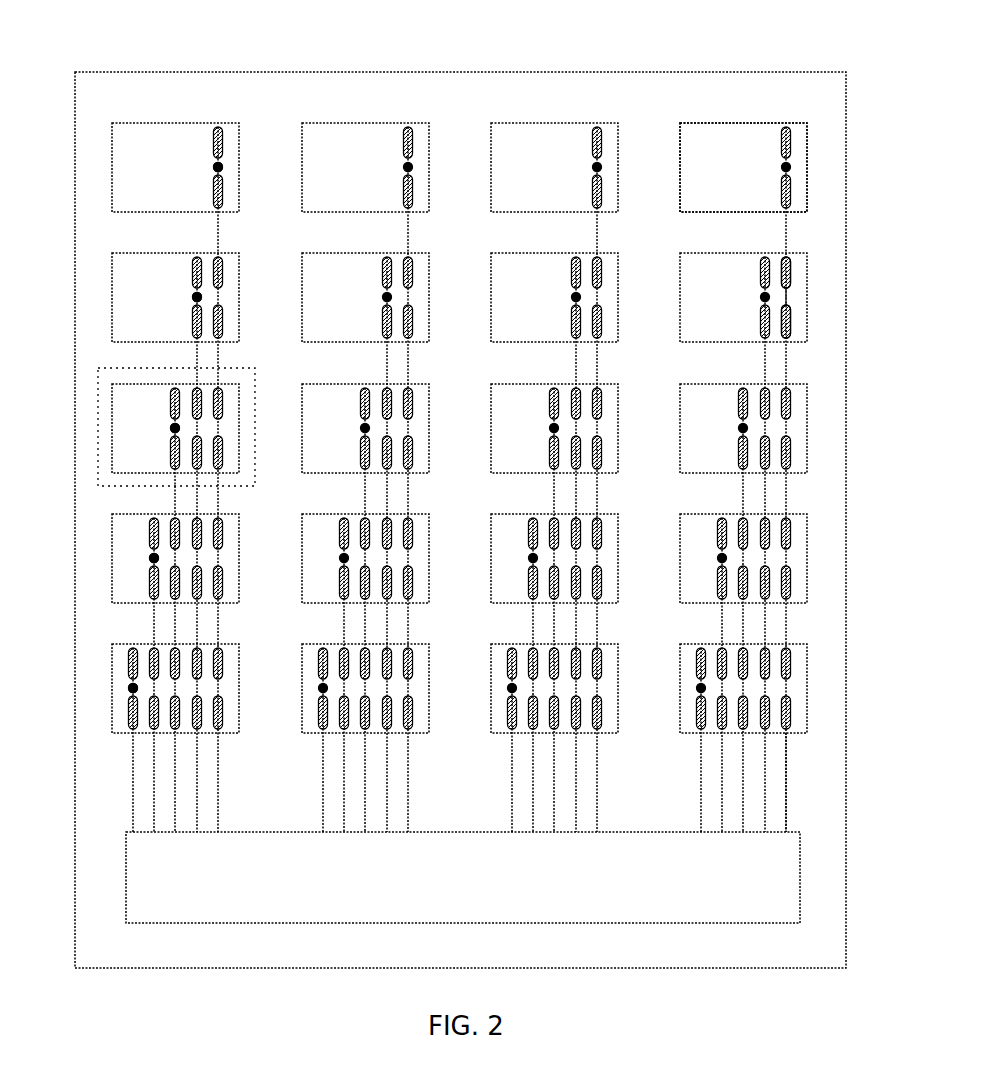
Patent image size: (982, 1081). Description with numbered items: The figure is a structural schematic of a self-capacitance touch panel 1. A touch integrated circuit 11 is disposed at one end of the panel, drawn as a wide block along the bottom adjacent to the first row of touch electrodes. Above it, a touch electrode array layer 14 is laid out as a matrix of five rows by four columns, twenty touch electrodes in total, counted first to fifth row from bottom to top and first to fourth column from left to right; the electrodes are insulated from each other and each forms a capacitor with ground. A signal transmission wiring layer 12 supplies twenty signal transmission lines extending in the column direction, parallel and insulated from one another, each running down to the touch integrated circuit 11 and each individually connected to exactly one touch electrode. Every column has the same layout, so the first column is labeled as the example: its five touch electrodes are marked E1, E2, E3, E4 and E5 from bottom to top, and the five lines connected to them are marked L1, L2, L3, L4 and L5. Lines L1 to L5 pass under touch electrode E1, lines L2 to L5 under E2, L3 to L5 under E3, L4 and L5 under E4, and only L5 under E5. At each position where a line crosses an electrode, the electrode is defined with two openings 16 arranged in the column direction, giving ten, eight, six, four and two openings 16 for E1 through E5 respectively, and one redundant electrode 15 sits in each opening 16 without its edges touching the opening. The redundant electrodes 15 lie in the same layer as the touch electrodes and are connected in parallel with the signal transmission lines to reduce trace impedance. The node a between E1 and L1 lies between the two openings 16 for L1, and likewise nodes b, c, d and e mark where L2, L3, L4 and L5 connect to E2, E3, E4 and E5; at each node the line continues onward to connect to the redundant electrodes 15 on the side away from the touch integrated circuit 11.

The self-capacitance touch panel 1 is at (503, 97).
The touch integrated circuit 11 is at (767, 900).
The signal transmission wiring layer 12 is at (787, 771).
The touch electrode array layer 14 is at (775, 118).
The redundant electrode 15 is at (787, 307).
The opening 16 is at (787, 263).
The touch electrode E1 is at (118, 714).
The touch electrode E2 is at (123, 586).
The touch electrode E3 is at (130, 458).
The touch electrode E4 is at (135, 318).
The touch electrode E5 is at (132, 190).
The signal transmission line L1 is at (133, 768).
The signal transmission line L2 is at (154, 623).
The signal transmission line L3 is at (175, 498).
The signal transmission line L4 is at (197, 360).
The signal transmission line L5 is at (217, 232).
The node a is at (125, 688).
The node b is at (145, 558).
The node c is at (167, 428).
The node d is at (188, 297).
The node e is at (210, 167).